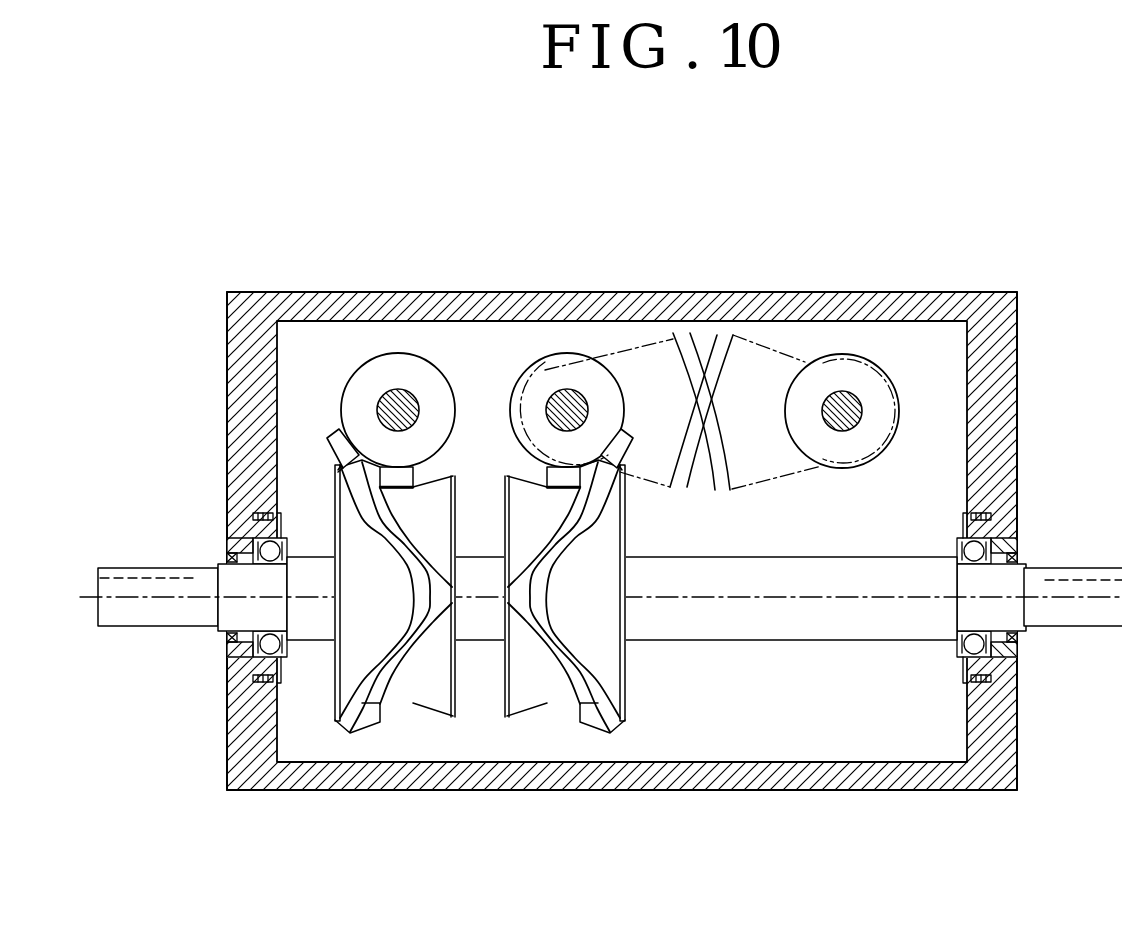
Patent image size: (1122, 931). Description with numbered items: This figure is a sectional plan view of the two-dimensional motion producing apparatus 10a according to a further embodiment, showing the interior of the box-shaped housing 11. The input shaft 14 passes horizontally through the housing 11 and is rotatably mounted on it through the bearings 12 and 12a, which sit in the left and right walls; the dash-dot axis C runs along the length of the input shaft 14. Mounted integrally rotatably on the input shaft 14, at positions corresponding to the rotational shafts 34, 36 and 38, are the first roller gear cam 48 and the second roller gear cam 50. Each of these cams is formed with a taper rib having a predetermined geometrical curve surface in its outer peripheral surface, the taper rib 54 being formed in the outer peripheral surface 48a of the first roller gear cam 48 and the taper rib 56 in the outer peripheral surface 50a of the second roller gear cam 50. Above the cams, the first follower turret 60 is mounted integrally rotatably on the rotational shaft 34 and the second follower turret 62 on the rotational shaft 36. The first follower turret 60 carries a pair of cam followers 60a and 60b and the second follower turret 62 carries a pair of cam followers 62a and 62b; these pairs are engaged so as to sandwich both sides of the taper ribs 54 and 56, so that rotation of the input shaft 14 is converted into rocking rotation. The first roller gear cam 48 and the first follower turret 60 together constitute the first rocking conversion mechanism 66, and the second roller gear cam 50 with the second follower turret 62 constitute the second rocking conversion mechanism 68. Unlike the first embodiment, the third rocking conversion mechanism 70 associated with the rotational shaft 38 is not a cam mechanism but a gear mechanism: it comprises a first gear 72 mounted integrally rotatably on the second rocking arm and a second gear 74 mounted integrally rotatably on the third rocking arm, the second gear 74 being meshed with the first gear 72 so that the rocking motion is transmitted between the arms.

The two-dimensional motion producing apparatus 10a is at (952, 276).
The housing 11 is at (236, 715).
The bearing 12 is at (248, 552).
The bearing 12a is at (1013, 548).
The input shaft 14 is at (108, 568).
The shaft axis C is at (808, 610).
The rotational shaft 34 is at (418, 396).
The rotational shaft 36 is at (556, 412).
The rotational shaft 38 is at (858, 412).
The first roller gear cam 48 is at (327, 681).
The outer peripheral surface 48a is at (405, 706).
The second roller gear cam 50 is at (624, 672).
The outer peripheral surface 50a is at (550, 706).
The taper rib 54 is at (370, 734).
The taper rib 56 is at (600, 734).
The first follower turret 60 is at (368, 372).
The cam follower 60a is at (330, 434).
The cam follower 60b is at (340, 468).
The second follower turret 62 is at (543, 372).
The cam follower 62a is at (552, 480).
The cam follower 62b is at (628, 432).
The first rocking conversion mechanism 66 is at (318, 458).
The second rocking conversion mechanism 68 is at (650, 493).
The third rocking conversion mechanism 70 is at (740, 504).
The first gear 72 is at (652, 352).
The second gear 74 is at (797, 362).